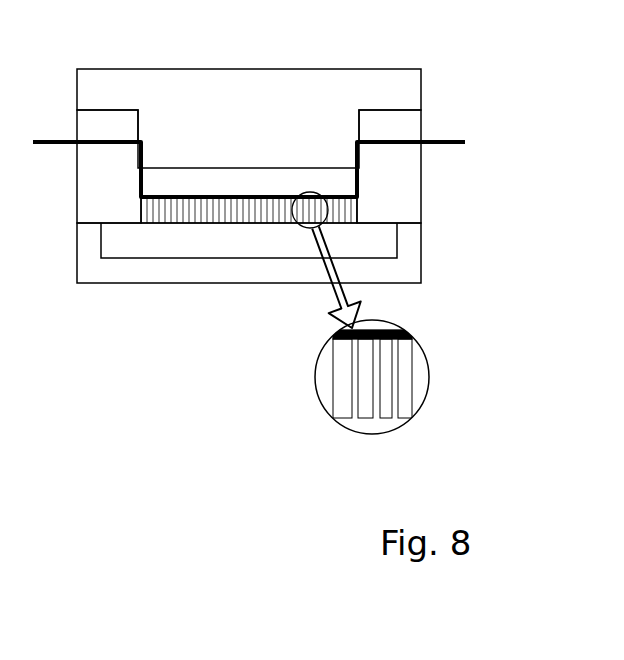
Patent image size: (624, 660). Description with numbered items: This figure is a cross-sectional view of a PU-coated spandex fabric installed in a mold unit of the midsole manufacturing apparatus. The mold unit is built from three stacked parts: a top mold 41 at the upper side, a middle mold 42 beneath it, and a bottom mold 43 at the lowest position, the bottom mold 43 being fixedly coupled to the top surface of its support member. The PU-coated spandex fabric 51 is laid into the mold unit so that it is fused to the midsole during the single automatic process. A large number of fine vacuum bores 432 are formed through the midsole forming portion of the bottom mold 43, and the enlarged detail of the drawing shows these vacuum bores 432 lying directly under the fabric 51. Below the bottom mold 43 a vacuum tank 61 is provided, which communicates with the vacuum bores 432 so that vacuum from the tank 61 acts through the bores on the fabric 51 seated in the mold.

The top mold 41 is at (237, 102).
The middle mold 42 is at (421, 112).
The bottom mold 43 is at (410, 203).
The PU-coated spandex fabric 51 is at (453, 146).
The vacuum tank 61 is at (400, 270).
The vacuum bores 432 is at (390, 412).